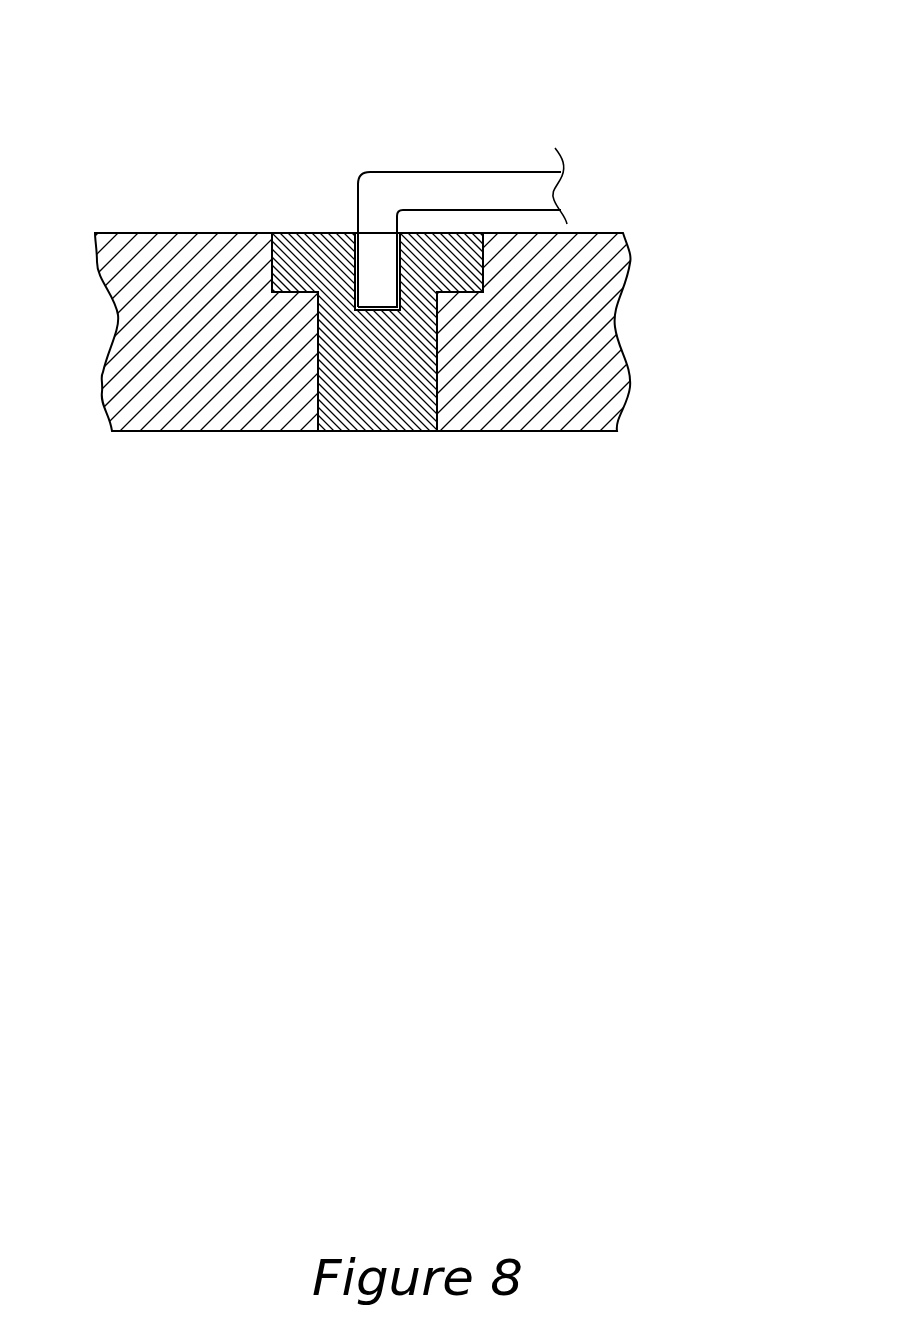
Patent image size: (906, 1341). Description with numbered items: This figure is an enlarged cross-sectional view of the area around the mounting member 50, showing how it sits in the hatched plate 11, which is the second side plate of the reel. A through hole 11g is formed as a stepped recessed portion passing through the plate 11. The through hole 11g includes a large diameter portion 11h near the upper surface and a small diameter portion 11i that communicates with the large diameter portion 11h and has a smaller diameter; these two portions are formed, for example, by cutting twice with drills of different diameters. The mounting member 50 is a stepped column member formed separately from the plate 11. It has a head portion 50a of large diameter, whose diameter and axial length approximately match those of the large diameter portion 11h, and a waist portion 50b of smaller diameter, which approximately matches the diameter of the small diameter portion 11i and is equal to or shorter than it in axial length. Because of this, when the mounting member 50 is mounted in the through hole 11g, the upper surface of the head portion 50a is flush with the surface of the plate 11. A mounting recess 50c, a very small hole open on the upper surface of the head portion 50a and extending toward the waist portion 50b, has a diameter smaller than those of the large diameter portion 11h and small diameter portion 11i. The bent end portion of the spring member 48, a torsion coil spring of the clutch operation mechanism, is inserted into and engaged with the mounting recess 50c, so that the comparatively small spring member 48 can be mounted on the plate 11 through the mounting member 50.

The base block 11 is at (137, 245).
The mounting member 50 is at (308, 233).
The head portion 50a is at (460, 263).
The waist portion 50b is at (413, 325).
The mounting recess 50c is at (357, 275).
The spring member 48 is at (505, 187).
The large diameter portion 11h is at (272, 262).
The small diameter portion 11i is at (318, 393).
The through hole 11g is at (437, 377).